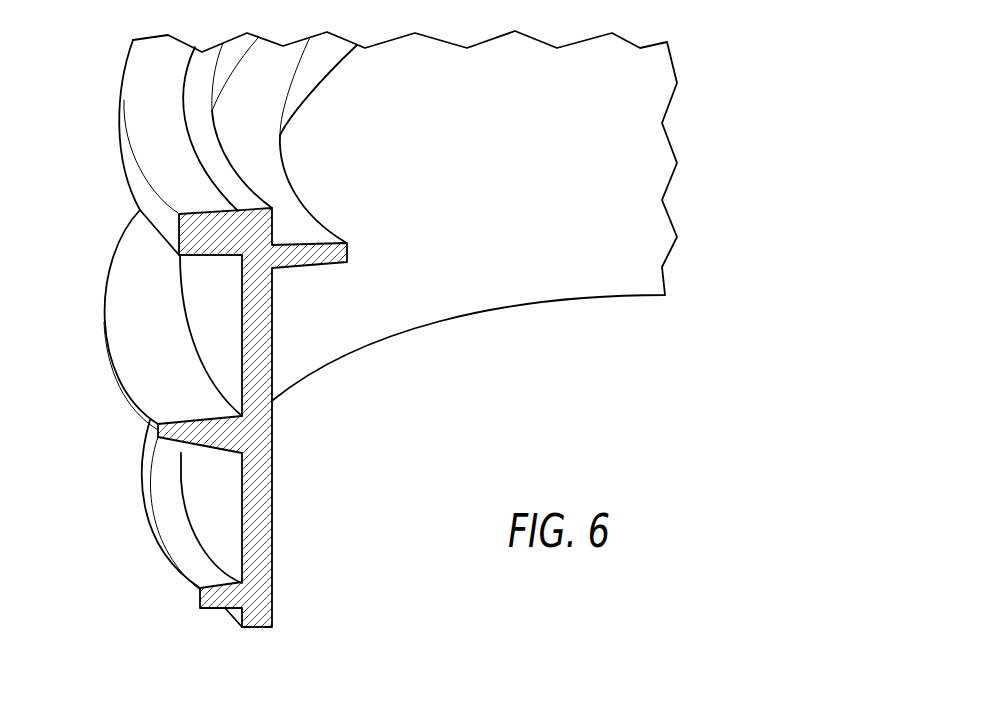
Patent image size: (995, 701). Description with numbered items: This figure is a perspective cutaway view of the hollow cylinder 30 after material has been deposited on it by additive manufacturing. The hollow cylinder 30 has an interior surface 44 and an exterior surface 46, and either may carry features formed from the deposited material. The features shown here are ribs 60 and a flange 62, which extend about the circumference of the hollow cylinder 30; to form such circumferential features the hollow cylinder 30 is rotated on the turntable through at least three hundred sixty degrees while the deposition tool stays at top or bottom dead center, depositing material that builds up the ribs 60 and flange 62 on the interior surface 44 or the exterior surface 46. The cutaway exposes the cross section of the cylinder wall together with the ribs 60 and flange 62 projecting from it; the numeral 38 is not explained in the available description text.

The hollow cylinder 30 is at (397, 338).
The web of ring body 38 is at (257, 572).
The interior surface 44 is at (430, 326).
The exterior surface 46 is at (240, 510).
The rib 60 is at (295, 190).
The flange 62 is at (118, 133).